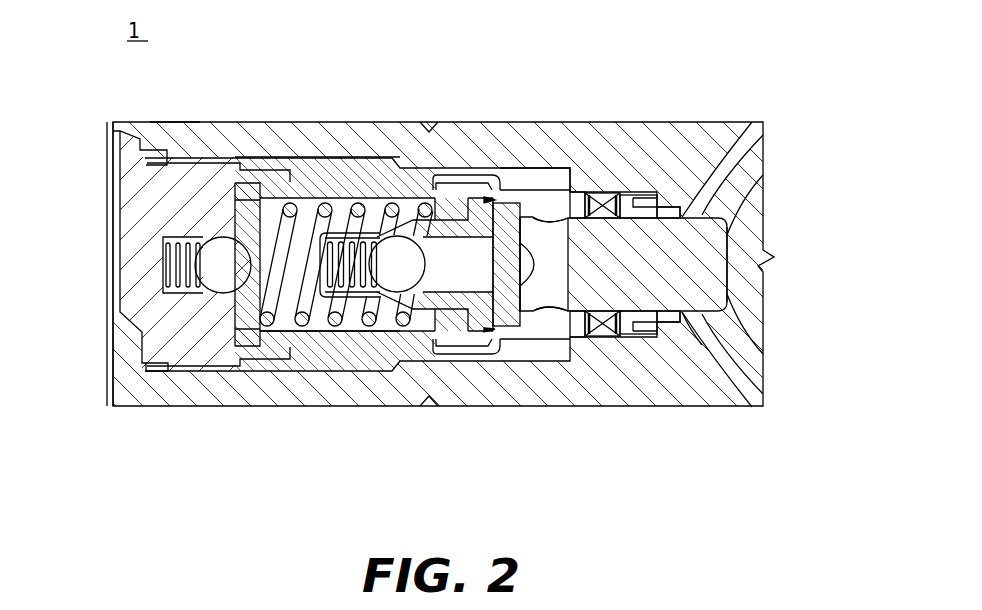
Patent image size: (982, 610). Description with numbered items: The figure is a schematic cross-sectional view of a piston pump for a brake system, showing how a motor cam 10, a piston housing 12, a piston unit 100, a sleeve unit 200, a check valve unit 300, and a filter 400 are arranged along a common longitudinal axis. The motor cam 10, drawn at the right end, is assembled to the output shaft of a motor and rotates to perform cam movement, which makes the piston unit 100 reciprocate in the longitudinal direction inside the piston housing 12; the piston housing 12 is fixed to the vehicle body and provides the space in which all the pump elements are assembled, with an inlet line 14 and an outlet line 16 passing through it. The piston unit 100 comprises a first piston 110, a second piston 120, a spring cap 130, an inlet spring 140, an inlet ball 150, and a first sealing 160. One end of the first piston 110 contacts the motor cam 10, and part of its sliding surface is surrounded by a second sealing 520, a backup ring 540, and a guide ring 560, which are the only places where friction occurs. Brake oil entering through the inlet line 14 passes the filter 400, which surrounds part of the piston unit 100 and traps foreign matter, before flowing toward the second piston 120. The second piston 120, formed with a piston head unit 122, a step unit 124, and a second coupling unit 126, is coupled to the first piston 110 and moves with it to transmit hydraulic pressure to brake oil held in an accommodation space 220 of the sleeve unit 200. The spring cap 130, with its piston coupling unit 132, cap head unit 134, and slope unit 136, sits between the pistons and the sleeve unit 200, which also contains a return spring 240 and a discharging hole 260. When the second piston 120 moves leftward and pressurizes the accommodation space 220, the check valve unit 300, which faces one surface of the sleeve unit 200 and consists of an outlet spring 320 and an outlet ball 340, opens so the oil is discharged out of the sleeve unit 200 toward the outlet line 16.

The motor cam 10 is at (762, 217).
The piston housing 12 is at (170, 126).
The inlet line 14 is at (533, 176).
The outlet line 16 is at (211, 158).
The piston unit 100 is at (726, 316).
The first piston 110 is at (700, 312).
The second piston 120 is at (547, 452).
The piston head unit 122 is at (447, 300).
The step unit 124 is at (481, 318).
The second coupling unit 126 is at (504, 326).
The spring cap 130 is at (353, 308).
The piston coupling unit 132 is at (453, 206).
The cap head unit 134 is at (362, 232).
The slope unit 136 is at (400, 236).
The inlet spring 140 is at (352, 236).
The inlet ball 150 is at (421, 300).
The first sealing 160 is at (461, 176).
The sleeve unit 200 is at (319, 172).
The accommodation space 220 is at (320, 326).
The return spring 240 is at (237, 196).
The discharging hole 260 is at (252, 330).
The check valve unit 300 is at (132, 342).
The outlet spring 320 is at (173, 238).
The outlet ball 340 is at (200, 258).
The filter 400 is at (559, 326).
The second sealing 520 is at (604, 336).
The backup ring 540 is at (630, 193).
The guide ring 560 is at (648, 336).